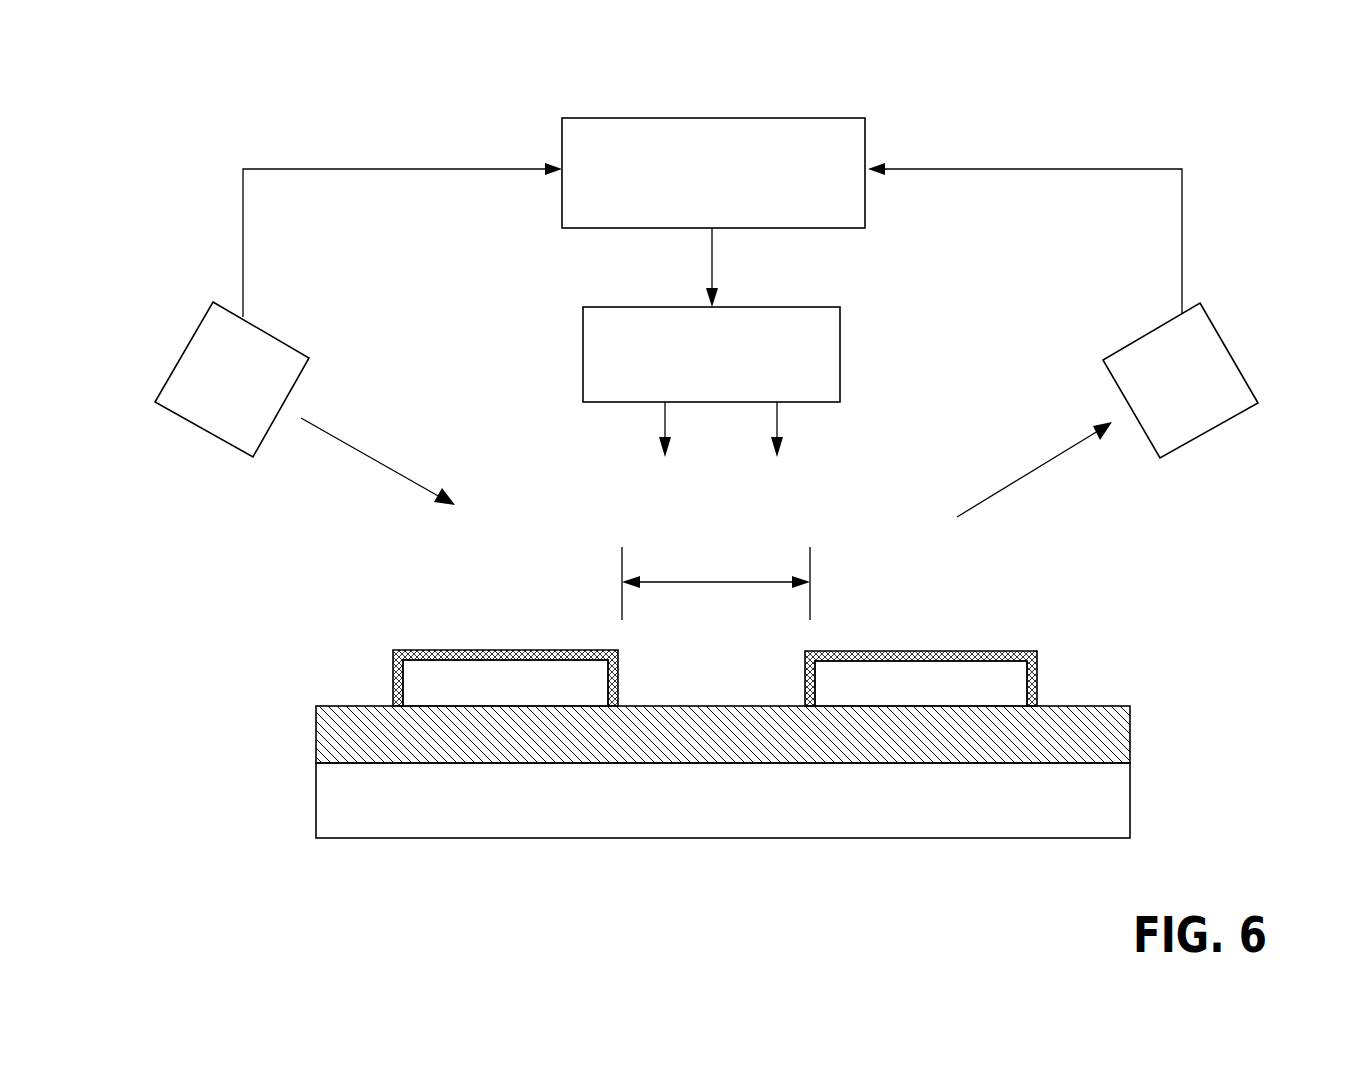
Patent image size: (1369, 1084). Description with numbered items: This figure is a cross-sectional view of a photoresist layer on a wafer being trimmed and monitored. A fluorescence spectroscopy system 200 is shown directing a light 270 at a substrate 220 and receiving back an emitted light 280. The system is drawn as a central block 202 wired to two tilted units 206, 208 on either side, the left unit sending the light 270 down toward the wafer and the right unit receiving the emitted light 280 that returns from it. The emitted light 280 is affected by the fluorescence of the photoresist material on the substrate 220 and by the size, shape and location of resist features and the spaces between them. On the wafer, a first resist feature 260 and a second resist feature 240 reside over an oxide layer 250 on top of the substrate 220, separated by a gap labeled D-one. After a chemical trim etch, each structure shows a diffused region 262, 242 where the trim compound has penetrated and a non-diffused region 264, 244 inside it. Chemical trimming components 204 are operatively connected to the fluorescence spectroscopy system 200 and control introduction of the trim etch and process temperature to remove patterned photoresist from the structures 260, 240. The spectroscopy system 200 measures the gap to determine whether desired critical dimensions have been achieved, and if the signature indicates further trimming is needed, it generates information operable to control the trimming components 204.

The fluorescence spectroscopy system 200 is at (1270, 147).
The fluorescence spectroscopy system 202 is at (865, 145).
The chemical trimming components 204 is at (777, 307).
The excitation light source 206 is at (198, 430).
The fluorescence detector 208 is at (1203, 437).
The substrate 220 is at (1130, 803).
The second resist feature 240 is at (975, 652).
The diffused region 242 is at (917, 650).
The non-diffused region 244 is at (853, 665).
The oxide layer 250 is at (1130, 740).
The first resist feature 260 is at (459, 651).
The diffused region 262 is at (532, 650).
The non-diffused region 264 is at (467, 665).
The light 270 is at (347, 443).
The emitted light 280 is at (1032, 467).